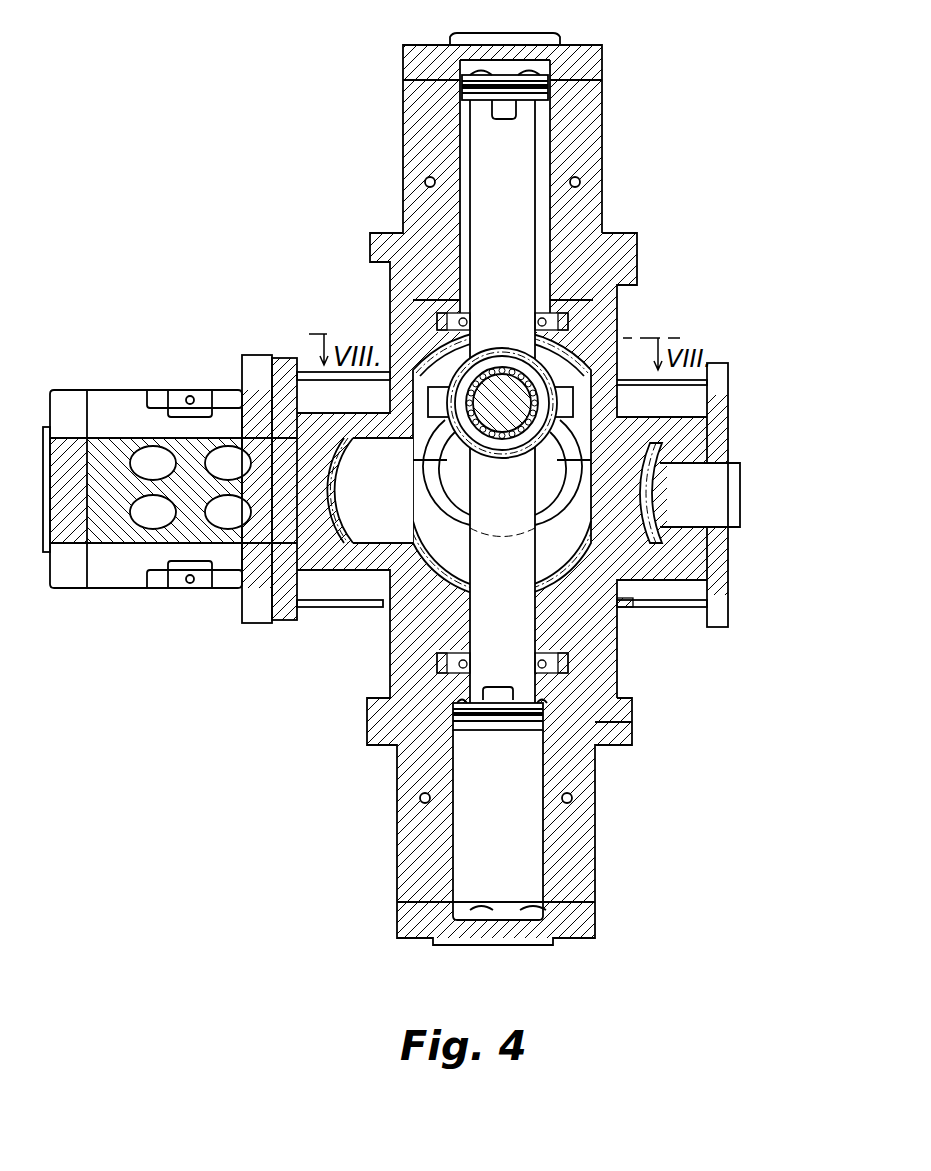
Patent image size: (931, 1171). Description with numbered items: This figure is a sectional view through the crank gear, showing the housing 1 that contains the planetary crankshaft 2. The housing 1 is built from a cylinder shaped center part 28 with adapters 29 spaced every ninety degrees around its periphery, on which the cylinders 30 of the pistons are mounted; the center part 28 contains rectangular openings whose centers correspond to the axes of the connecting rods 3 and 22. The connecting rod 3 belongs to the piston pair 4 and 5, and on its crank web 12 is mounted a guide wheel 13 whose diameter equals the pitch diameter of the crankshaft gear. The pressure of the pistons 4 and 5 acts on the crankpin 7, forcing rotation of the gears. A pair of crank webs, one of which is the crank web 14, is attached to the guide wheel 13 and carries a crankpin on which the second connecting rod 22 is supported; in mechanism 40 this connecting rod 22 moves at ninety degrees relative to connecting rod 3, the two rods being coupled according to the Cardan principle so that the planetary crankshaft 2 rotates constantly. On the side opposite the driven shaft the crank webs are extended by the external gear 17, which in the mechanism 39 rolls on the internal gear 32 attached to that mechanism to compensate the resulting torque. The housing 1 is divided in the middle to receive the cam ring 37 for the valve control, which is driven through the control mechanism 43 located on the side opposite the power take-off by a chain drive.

The housing 1 is at (618, 362).
The planetary crankshaft 2 is at (453, 537).
The connecting rod 3 is at (503, 183).
The piston 4 is at (462, 88).
The piston 5 is at (453, 715).
The crankpin 7 is at (393, 325).
The crank web 12 is at (355, 372).
The guide wheel 13 is at (622, 332).
The crank web 14 is at (622, 620).
The external gear 17 is at (622, 585).
The connecting rod 22 is at (695, 495).
The cylinder shaped center part 28 is at (615, 393).
The adapter 29 is at (607, 273).
The cylinder 30 is at (432, 226).
The internal gear 32 is at (618, 605).
The cam ring 37 is at (630, 737).
The mechanism 39 is at (560, 472).
The mechanism 40 is at (433, 488).
The control mechanism 43 is at (658, 495).